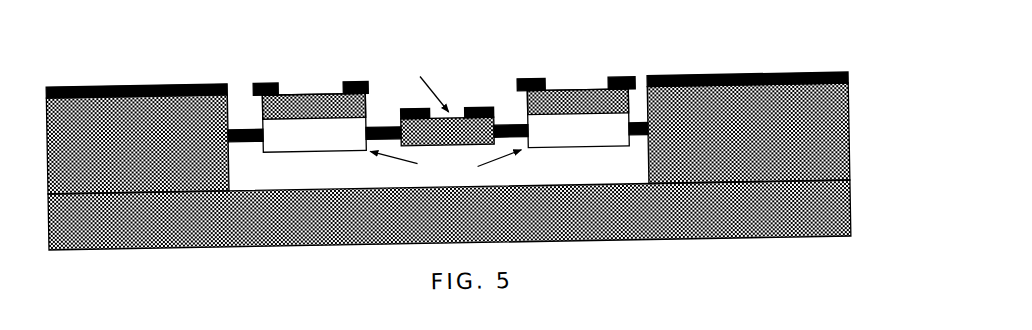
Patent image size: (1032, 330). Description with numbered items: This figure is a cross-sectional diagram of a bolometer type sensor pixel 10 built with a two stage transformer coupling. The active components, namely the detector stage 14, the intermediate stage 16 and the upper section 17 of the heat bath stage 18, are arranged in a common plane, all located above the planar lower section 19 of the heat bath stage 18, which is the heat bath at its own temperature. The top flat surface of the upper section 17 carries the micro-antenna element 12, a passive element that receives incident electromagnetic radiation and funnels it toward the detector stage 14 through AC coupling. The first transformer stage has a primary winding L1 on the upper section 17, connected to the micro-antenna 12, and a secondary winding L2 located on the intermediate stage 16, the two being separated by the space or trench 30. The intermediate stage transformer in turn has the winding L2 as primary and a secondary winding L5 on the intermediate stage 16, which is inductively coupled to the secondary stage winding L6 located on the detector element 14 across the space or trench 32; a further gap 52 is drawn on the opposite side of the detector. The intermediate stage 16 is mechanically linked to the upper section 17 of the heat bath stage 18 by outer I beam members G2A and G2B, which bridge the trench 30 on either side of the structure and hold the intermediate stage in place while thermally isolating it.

The bolometer type sensor pixel 10 is at (621, 30).
The micro-antenna element 12 is at (53, 87).
The detector stage 14 is at (441, 152).
The intermediate stage 16 is at (310, 158).
The upper section of the heat bath stage 17 is at (850, 124).
The heat bath stage 18 is at (778, 133).
The planar lower section of the heat bath stage 19 is at (854, 222).
The space (trench) 30 is at (248, 128).
The space (trench) 32 is at (370, 116).
The thermal link between detector and intermediate stage 52 is at (513, 125).
The primary winding L1 is at (220, 59).
The secondary winding L2 is at (270, 87).
The secondary winding L5 is at (355, 87).
The secondary stage winding L6 is at (420, 116).
The outer I beam member G2A is at (245, 150).
The outer I beam member G2B is at (645, 146).